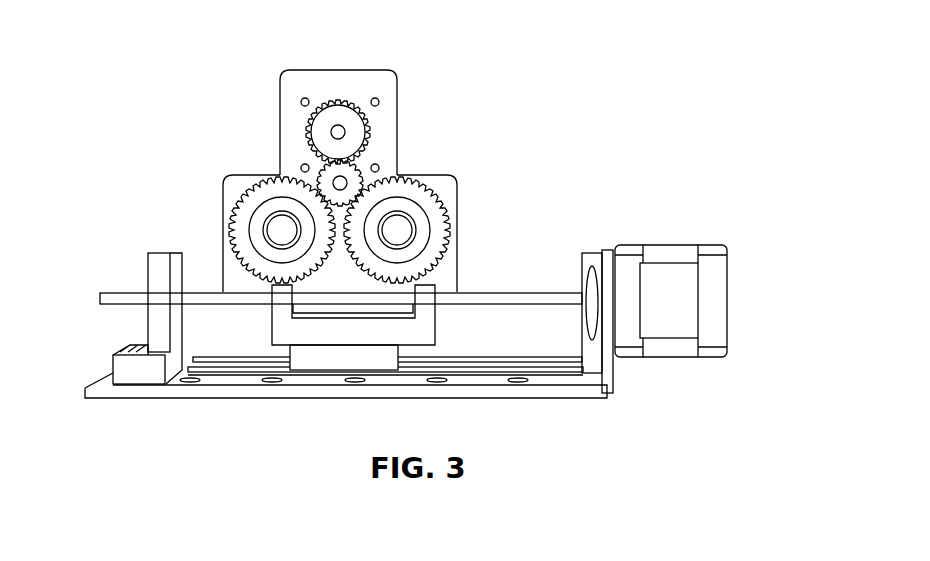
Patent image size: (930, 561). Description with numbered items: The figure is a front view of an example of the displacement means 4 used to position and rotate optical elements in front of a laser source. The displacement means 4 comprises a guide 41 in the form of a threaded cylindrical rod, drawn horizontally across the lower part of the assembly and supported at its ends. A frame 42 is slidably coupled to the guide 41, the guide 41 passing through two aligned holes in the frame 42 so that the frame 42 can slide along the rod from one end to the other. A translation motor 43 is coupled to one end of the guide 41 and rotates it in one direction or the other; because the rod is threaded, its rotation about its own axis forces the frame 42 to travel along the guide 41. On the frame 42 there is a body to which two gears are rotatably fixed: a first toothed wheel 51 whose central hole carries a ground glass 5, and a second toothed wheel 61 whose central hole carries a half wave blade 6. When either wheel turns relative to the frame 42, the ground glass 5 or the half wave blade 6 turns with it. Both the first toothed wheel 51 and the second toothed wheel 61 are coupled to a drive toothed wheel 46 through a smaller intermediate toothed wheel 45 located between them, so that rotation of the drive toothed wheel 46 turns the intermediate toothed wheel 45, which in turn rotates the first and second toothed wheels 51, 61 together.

The displacement means 4 is at (668, 70).
The ground glass 5 is at (392, 232).
The first toothed wheel 51 is at (403, 190).
The half wave blade 6 is at (280, 231).
The second toothed wheel 61 is at (275, 193).
The guide 41 is at (530, 297).
The frame 42 is at (327, 328).
The translation motor 43 is at (695, 317).
The intermediate toothed wheel 45 is at (343, 177).
The drive toothed wheel 46 is at (352, 130).